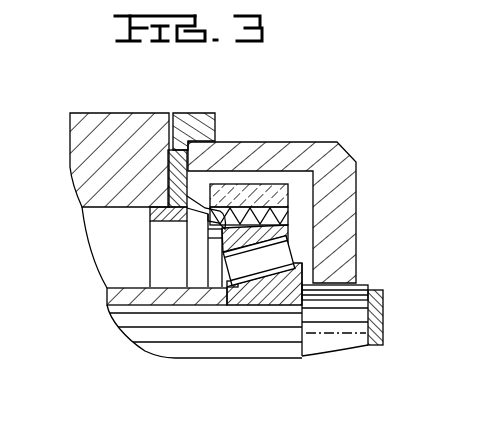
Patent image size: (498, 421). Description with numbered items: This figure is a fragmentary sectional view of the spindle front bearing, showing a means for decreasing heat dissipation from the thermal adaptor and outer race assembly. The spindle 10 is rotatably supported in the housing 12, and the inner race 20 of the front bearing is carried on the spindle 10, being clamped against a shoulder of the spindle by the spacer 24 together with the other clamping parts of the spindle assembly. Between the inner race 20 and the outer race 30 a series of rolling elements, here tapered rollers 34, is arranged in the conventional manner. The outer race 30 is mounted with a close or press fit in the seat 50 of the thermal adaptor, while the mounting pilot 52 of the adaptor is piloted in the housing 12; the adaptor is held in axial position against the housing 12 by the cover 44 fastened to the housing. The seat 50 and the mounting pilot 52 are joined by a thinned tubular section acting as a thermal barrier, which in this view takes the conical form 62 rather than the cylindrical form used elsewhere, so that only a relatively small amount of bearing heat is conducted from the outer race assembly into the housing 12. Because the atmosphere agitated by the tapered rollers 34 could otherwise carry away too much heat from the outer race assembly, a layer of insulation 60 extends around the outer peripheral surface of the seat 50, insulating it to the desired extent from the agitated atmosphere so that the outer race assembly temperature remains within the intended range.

The spindle 10 is at (360, 335).
The housing 12 is at (117, 123).
The inner race 20 is at (380, 296).
The spacer 24 is at (133, 294).
The outer race 30 is at (226, 231).
The tapered rollers 34 is at (259, 261).
The cover 44 is at (279, 147).
The seat 50 is at (278, 214).
The mounting pilot 52 is at (160, 213).
The layer of insulation 60 is at (278, 196).
The conical thermal barrier 62 is at (187, 214).